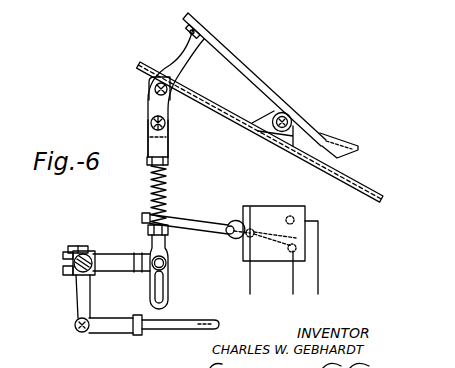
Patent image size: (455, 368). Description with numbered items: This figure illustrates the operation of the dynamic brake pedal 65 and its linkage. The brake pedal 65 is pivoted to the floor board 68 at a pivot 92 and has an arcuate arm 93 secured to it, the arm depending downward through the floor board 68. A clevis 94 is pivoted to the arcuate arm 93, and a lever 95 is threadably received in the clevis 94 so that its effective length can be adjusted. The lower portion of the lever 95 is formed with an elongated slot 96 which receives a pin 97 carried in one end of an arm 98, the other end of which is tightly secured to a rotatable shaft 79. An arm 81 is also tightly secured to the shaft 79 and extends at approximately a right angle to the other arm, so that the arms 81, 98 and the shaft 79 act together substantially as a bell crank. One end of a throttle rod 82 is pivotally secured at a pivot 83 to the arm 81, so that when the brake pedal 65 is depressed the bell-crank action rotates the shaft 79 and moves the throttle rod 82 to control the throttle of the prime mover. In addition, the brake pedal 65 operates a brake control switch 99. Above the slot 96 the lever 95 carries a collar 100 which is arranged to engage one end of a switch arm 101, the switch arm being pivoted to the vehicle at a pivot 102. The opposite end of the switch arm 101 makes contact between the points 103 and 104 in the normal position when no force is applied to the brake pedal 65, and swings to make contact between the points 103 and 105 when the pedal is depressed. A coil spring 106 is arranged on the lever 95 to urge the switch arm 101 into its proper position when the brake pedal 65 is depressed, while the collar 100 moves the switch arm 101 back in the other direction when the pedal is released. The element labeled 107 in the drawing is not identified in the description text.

The dynamic brake pedal 65 is at (229, 47).
The floor board 68 is at (201, 104).
The rotatable shaft 79 is at (68, 247).
The arm 81 is at (82, 304).
The throttle rod 82 is at (187, 330).
The pivot 83 is at (80, 333).
The pivot 92 is at (290, 120).
The arcuate arm 93 is at (182, 50).
The clevis 94 is at (168, 152).
The lever 95 is at (165, 247).
The elongated slot 96 is at (163, 293).
The pin 97 is at (167, 265).
The arm 98 is at (108, 260).
The brake control switch 99 is at (306, 209).
The collar 100 is at (147, 227).
The switch arm 101 is at (183, 223).
The pivot 102 is at (233, 240).
The contact point 103 is at (250, 229).
The contact point 104 is at (296, 249).
The contact point 105 is at (294, 220).
The coil spring 106 is at (167, 183).
The roller bolt 107 is at (147, 95).